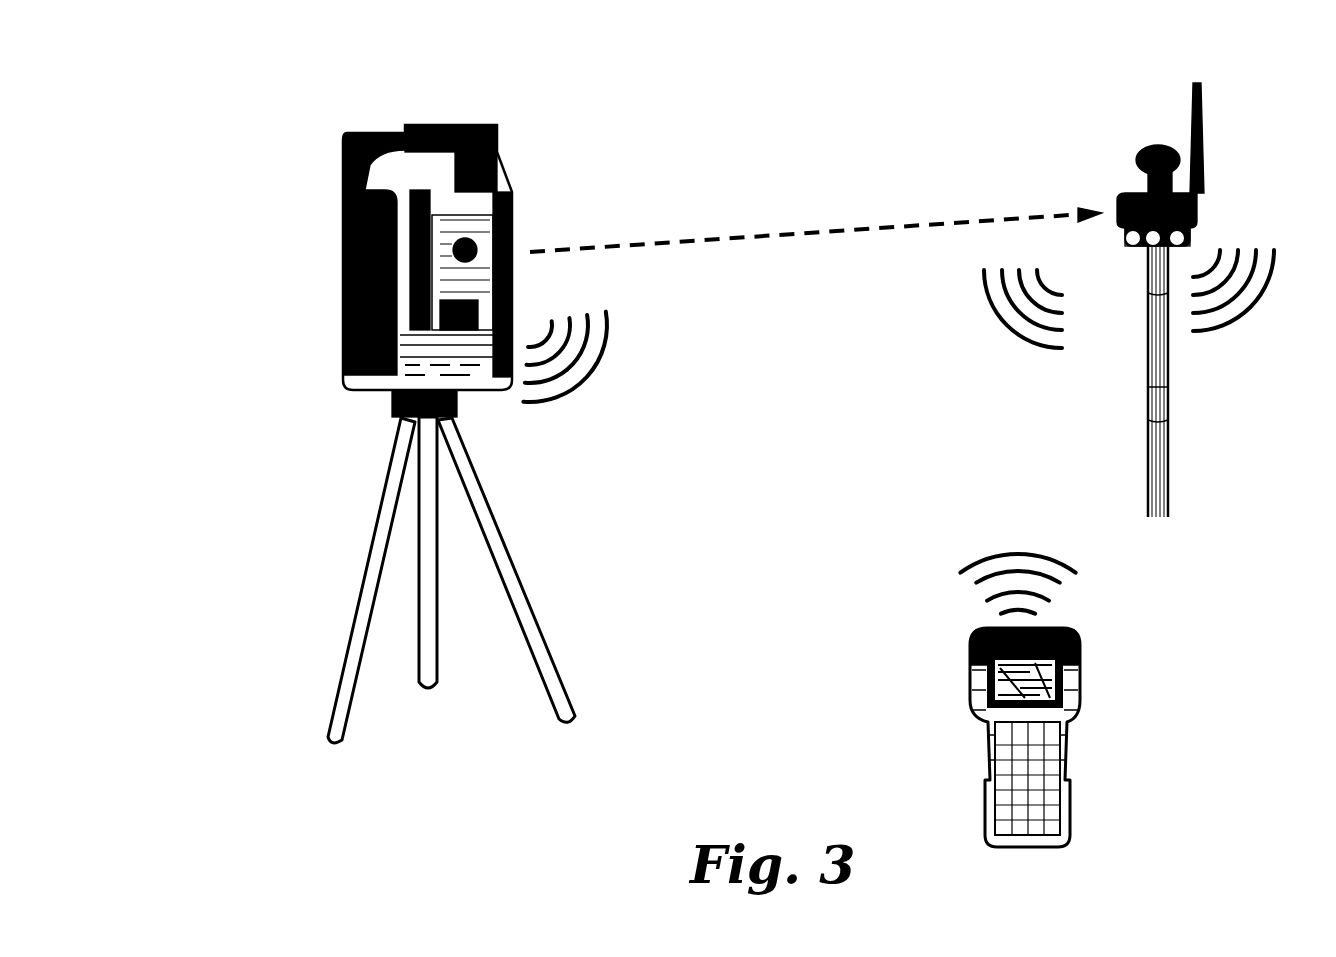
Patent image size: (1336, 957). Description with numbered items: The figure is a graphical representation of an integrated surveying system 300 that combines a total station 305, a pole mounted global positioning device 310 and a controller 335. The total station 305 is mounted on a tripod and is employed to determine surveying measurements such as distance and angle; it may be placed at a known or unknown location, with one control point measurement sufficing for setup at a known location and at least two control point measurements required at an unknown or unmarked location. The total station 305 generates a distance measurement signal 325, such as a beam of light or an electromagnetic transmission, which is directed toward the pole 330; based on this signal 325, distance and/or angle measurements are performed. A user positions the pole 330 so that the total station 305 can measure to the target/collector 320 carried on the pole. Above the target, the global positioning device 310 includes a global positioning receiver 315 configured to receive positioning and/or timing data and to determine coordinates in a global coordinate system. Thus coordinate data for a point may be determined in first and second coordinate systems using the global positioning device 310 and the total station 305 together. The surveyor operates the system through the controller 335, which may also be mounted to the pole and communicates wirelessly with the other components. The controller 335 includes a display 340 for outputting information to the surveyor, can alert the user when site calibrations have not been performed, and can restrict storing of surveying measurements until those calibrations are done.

The integrated surveying system 300 is at (240, 82).
The total station 305 is at (512, 208).
The pole mounted global positioning device 310 is at (1243, 172).
The global positioning receiver 315 is at (1150, 153).
The target/collector 320 is at (1150, 246).
The distance measurement signal 325 is at (816, 224).
The pole 330 is at (1158, 503).
The controller 335 is at (1073, 676).
The display 340 is at (978, 662).